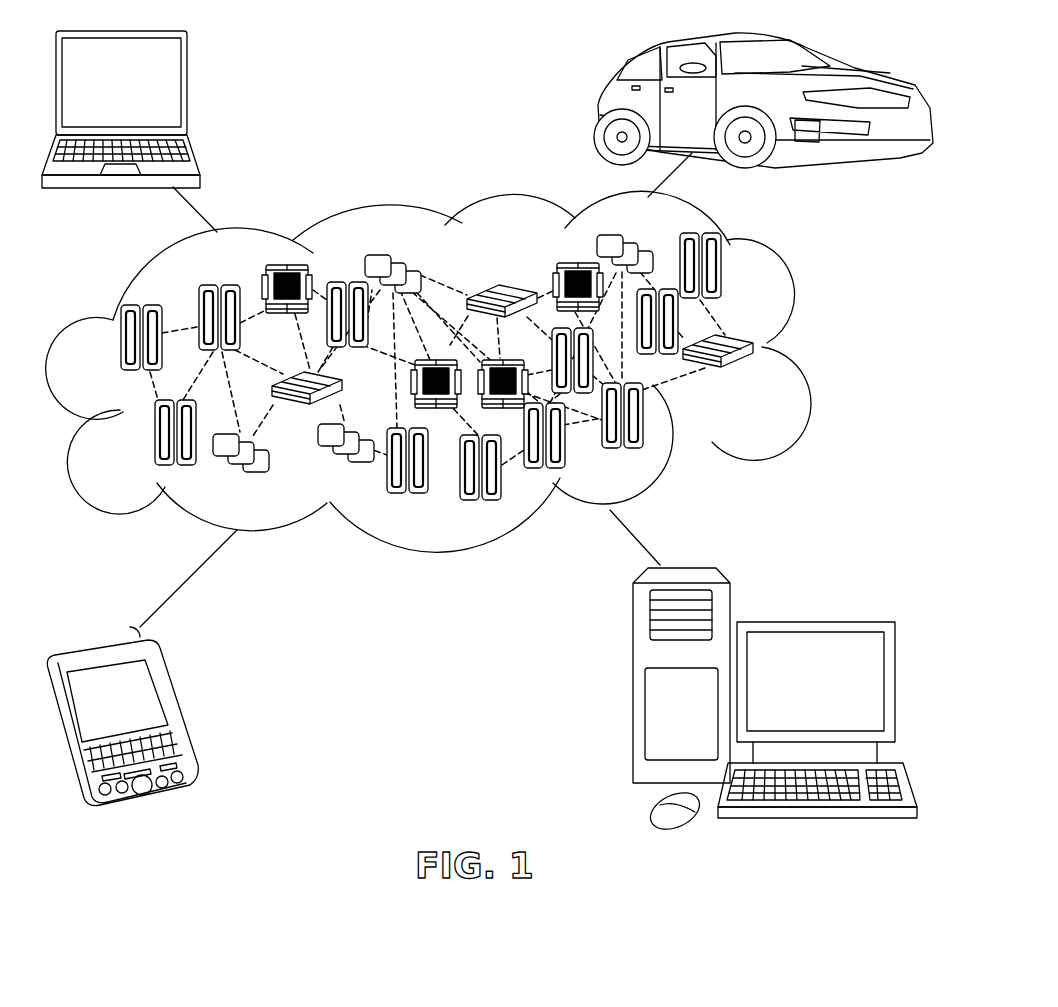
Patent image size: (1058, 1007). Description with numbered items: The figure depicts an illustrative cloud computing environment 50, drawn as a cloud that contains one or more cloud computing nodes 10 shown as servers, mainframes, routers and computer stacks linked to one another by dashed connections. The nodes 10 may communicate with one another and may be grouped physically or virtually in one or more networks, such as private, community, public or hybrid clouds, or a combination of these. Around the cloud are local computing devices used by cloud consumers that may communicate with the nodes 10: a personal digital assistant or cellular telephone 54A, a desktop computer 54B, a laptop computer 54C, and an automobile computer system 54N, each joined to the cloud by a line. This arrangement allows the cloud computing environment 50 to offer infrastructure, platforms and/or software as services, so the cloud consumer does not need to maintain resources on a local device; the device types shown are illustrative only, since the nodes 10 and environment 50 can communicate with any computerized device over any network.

The cloud computing nodes 10 is at (757, 377).
The cloud computing environment 50 is at (817, 347).
The personal digital assistant (PDA) or cellular telephone 54A is at (180, 711).
The desktop computer 54B is at (812, 622).
The laptop computer 54C is at (187, 90).
The automobile computer system 54N is at (604, 105).